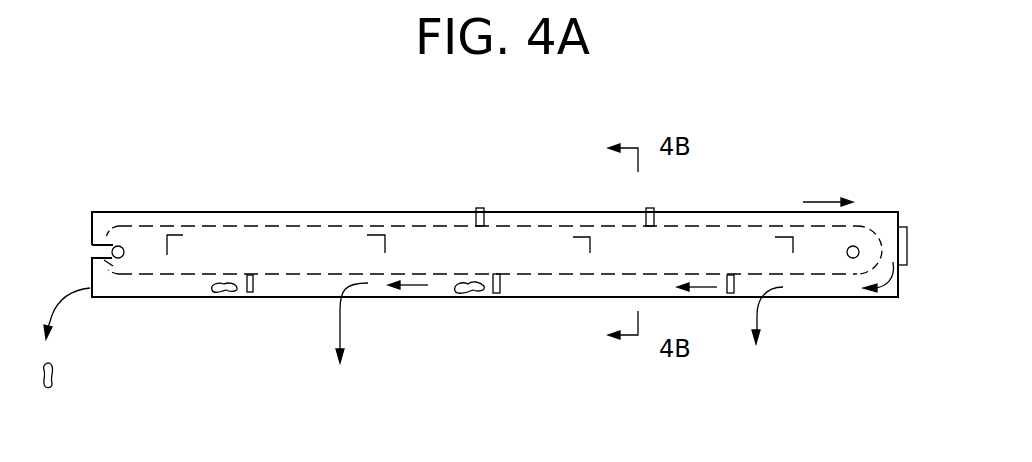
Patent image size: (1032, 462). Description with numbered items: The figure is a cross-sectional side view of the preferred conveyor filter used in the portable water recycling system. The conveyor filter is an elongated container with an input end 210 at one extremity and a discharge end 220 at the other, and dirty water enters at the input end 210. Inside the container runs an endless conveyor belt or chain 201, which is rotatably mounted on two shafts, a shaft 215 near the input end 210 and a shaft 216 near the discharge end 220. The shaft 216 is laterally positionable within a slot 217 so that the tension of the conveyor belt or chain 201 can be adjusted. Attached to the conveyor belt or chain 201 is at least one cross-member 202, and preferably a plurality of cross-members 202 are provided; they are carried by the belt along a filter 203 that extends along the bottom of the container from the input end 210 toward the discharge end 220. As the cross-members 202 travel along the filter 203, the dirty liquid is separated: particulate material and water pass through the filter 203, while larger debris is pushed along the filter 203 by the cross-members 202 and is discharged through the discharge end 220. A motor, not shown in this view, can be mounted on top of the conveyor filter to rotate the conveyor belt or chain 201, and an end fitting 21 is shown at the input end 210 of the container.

The discharge end 220 is at (78, 241).
The shaft 216 is at (124, 250).
The slot 217 is at (105, 266).
The cross-member 202 is at (646, 212).
The endless conveyor belt or chain 201 is at (552, 276).
The filter 203 is at (590, 300).
The shaft 215 is at (856, 246).
The input end 210 is at (876, 192).
The end tab 21 is at (906, 266).